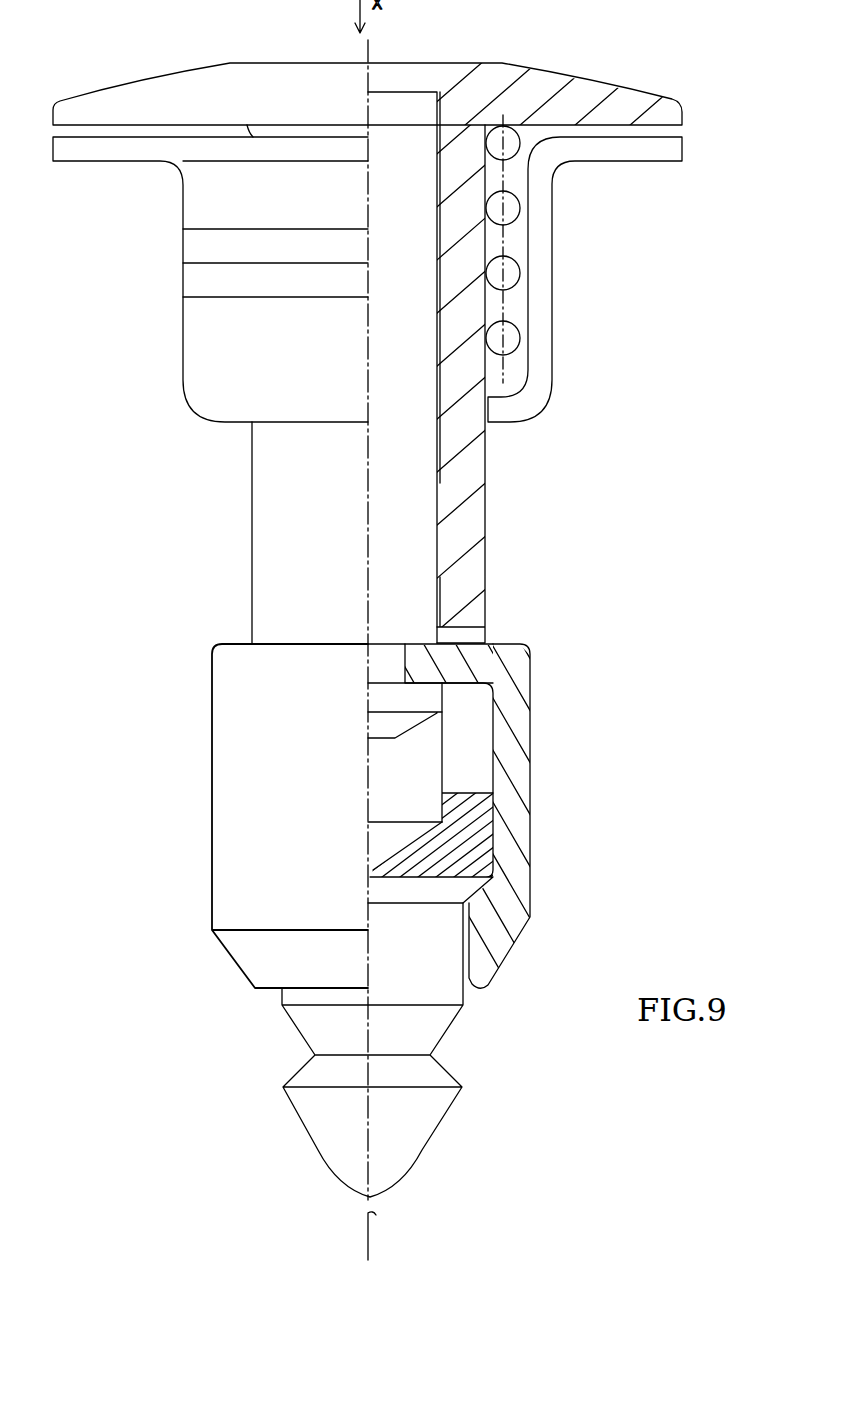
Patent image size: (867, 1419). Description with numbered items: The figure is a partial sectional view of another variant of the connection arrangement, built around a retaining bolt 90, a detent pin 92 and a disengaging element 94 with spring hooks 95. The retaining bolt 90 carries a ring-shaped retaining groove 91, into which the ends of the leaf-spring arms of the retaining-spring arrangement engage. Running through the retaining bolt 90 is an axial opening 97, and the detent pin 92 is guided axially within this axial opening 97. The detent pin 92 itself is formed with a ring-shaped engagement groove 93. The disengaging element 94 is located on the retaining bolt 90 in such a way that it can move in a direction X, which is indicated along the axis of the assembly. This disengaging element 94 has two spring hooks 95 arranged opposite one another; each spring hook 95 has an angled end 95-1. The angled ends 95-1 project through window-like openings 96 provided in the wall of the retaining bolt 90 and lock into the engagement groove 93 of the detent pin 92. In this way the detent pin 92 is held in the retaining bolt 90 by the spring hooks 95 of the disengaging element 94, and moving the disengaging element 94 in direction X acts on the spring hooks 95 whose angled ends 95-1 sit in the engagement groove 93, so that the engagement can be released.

The retaining bolt 90 is at (462, 470).
The ring-shaped retaining groove 91 is at (449, 1026).
The detent pin 92 is at (402, 583).
The ring-shaped engagement groove 93 is at (392, 668).
The disengaging element 94 is at (232, 840).
The spring hook 95 is at (520, 787).
The angled end of spring hook 95-1 is at (455, 670).
The window-like opening 96 is at (462, 747).
The axial opening 97 is at (393, 777).